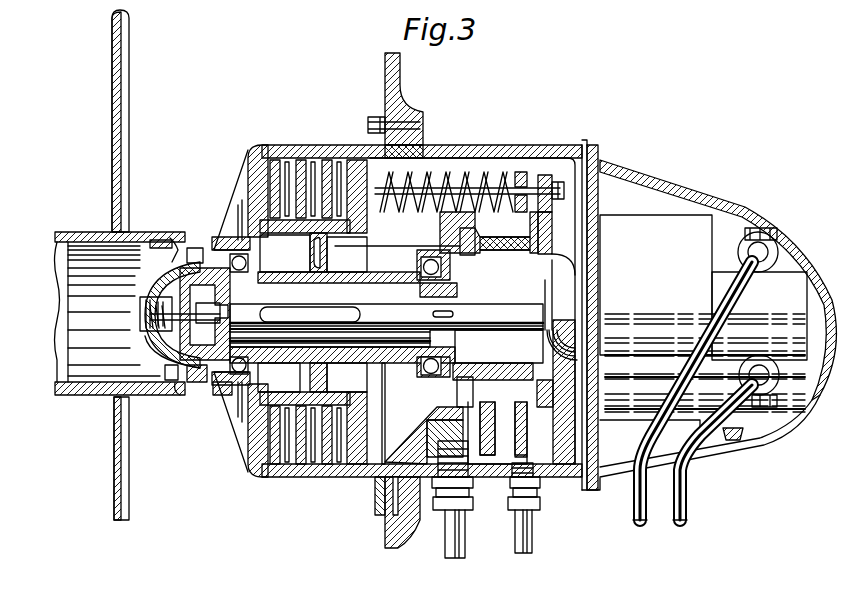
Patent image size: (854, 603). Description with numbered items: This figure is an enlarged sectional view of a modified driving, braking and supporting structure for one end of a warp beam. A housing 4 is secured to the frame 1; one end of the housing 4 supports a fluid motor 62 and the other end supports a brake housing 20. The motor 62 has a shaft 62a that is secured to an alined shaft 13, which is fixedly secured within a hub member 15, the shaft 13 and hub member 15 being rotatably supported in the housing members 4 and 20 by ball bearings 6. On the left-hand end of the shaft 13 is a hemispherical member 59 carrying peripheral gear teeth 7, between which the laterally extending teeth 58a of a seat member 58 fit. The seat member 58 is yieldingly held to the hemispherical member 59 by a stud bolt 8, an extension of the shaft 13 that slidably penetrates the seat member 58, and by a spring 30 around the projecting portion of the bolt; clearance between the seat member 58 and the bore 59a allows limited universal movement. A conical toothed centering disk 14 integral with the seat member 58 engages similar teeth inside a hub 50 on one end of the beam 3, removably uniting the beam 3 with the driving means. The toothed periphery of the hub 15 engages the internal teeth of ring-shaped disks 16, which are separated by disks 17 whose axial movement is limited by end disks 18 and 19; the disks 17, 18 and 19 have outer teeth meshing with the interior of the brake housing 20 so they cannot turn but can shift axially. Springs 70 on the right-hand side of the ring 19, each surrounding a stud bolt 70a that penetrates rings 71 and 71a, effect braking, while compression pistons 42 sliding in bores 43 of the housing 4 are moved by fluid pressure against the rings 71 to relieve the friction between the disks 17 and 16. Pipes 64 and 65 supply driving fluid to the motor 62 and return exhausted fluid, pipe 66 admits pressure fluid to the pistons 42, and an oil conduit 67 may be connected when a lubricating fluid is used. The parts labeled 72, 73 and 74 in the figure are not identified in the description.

The frame 1 is at (385, 522).
The beam 3 is at (92, 232).
The housing 4 is at (432, 155).
The ball bearings 6 is at (234, 258).
The peripheral gear teeth 7 is at (220, 396).
The stud bolt 8 is at (135, 318).
The shaft 13 is at (455, 290).
The conical toothed centering disk 14 is at (165, 372).
The hub member 15 is at (312, 376).
The ring-shaped disks 16 is at (290, 160).
The disks 17 is at (314, 162).
The end disk 18 is at (250, 156).
The end disk 19 is at (360, 160).
The brake housing 20 is at (246, 470).
The spring 30 is at (147, 334).
The compression pistons 42 is at (505, 412).
The bores 43 is at (437, 407).
The hub 50 is at (185, 248).
The seat member 58 is at (162, 240).
The laterally extending teeth 58a is at (190, 382).
The hemispherical member 59 is at (175, 266).
The bore 59a is at (140, 302).
The fluid motor 62 is at (682, 216).
The shaft 62a is at (517, 330).
The pipe 64 is at (688, 520).
The pipe 65 is at (633, 518).
The pipe 66 is at (463, 520).
The oil conduit 67 is at (531, 520).
The springs 70 is at (500, 172).
The stud bolt 70a is at (484, 172).
The ring 71 is at (562, 172).
The ring 71a is at (543, 175).
The rod 72 is at (380, 246).
The piston 73 is at (327, 250).
The chamber 74 is at (318, 240).